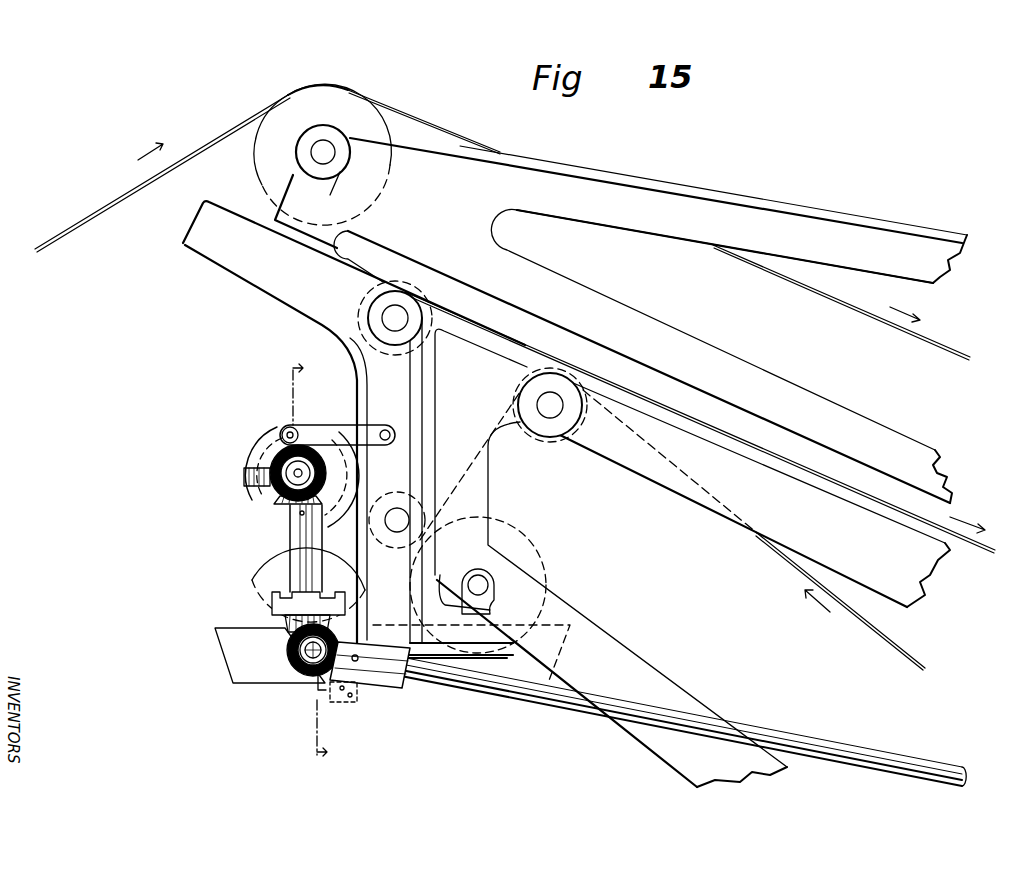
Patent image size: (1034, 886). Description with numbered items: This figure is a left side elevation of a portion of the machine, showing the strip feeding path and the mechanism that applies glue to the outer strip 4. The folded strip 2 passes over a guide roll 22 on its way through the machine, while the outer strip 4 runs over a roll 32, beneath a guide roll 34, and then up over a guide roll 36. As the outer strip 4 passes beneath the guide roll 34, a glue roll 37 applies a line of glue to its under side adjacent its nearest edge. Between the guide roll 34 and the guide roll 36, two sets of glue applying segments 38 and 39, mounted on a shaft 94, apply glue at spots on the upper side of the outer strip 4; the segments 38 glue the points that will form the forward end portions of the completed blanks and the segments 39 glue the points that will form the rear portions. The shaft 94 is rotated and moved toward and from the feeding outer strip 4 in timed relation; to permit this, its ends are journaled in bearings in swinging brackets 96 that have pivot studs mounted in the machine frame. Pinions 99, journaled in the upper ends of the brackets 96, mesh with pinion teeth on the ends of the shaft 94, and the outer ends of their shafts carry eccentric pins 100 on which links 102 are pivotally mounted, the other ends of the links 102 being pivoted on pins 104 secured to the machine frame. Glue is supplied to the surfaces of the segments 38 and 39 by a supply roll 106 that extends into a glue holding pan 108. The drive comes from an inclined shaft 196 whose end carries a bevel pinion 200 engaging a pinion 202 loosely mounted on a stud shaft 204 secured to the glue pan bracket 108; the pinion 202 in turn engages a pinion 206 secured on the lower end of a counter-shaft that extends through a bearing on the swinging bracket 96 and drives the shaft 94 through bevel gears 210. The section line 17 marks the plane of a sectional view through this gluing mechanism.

The strip 2 is at (78, 218).
The outer strip 4 is at (862, 488).
The section line 17 is at (306, 564).
The guide roll 22 is at (267, 152).
The roll 32 is at (532, 432).
The guide roll 34 is at (290, 542).
The guide roll 36 is at (372, 356).
The glue roll 37 is at (523, 542).
The segments 38 is at (242, 457).
The segments 39 is at (345, 476).
The shaft 94 is at (278, 473).
The brackets 96 is at (288, 558).
The pinions 99 is at (278, 430).
The eccentric pins 100 is at (272, 428).
The links 102 is at (331, 424).
The pins 104 is at (393, 433).
The supply roll 106 is at (246, 582).
The glue holding pan 108 is at (224, 657).
The inclined shaft 196 is at (787, 738).
The bevel pinion 200 is at (327, 687).
The pinion 202 is at (307, 652).
The stud shaft 204 is at (290, 673).
The pinion 206 is at (262, 625).
The bevel gears 210 is at (262, 500).